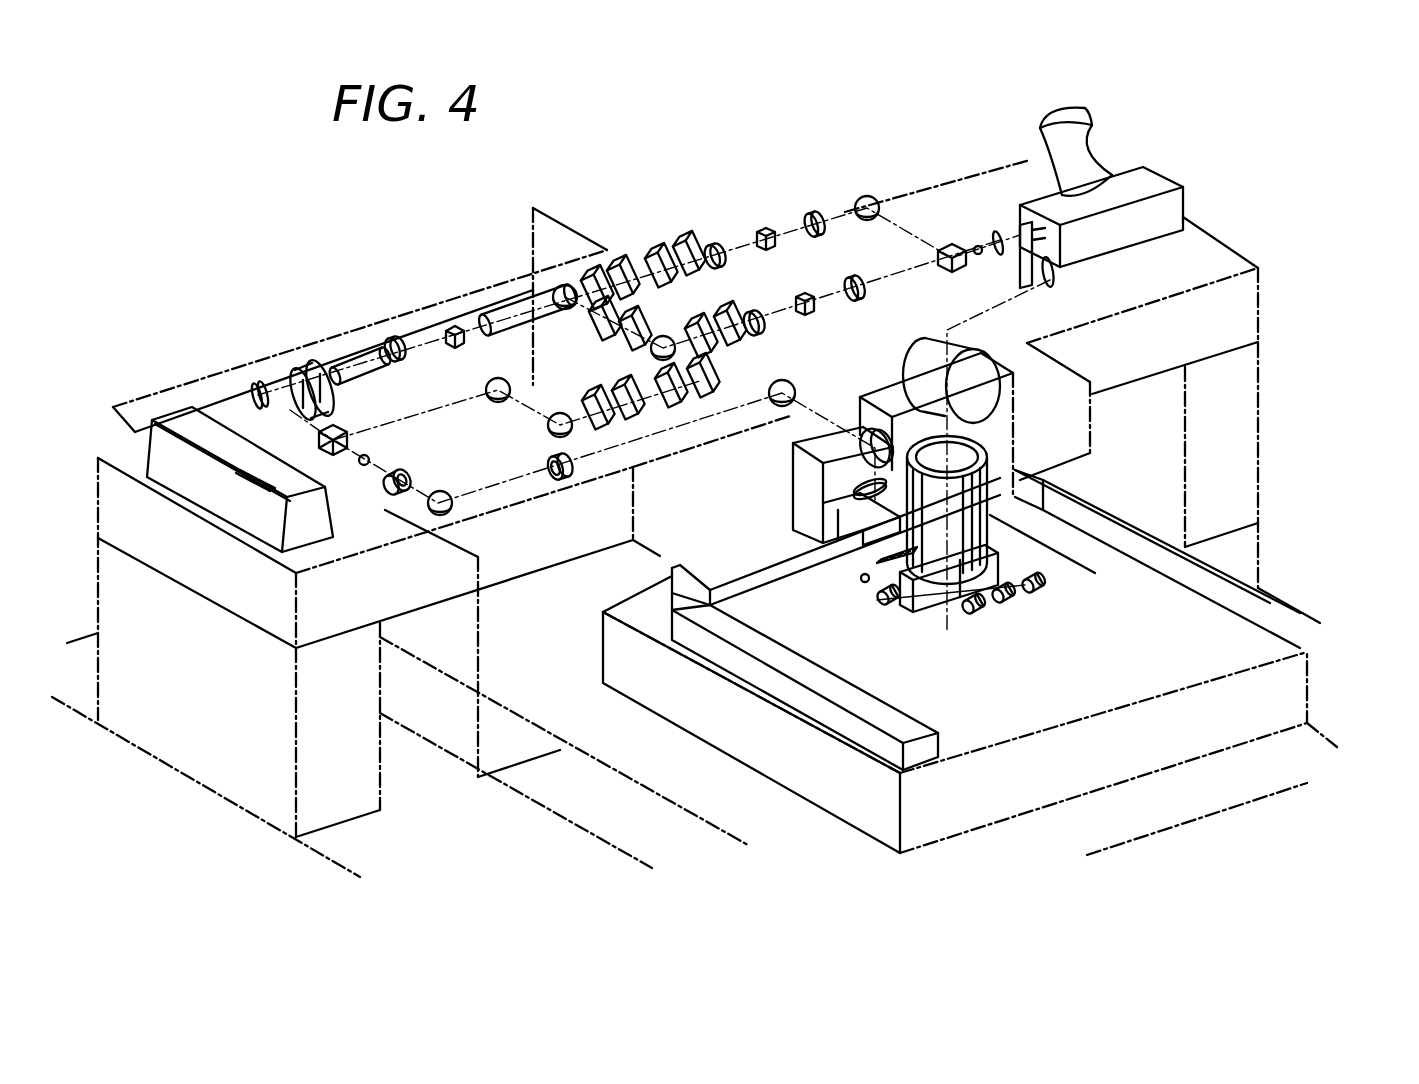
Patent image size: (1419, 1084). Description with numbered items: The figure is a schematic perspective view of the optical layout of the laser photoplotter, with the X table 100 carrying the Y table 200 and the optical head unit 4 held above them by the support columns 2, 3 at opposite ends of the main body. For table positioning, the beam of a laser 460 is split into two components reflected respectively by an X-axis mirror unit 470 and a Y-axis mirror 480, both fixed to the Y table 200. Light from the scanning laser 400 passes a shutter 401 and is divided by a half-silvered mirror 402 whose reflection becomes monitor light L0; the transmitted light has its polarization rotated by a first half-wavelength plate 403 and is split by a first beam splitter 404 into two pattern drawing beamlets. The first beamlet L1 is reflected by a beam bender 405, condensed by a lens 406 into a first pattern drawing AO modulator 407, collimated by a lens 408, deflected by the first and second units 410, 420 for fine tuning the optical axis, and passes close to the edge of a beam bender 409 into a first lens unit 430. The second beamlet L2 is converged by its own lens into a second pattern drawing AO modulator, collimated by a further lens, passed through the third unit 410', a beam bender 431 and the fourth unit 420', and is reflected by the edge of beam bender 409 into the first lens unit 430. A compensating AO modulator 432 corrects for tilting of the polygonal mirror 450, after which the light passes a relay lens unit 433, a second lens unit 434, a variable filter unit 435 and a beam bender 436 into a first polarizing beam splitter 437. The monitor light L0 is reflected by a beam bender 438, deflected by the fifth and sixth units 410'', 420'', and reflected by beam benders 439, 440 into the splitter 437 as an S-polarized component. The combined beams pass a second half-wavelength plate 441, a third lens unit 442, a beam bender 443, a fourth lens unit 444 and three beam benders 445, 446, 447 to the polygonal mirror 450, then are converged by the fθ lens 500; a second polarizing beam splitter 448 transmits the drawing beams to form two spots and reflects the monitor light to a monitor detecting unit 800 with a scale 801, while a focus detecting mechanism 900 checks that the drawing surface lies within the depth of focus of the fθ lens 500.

The X table 100 is at (1213, 820).
The Y table 200 is at (968, 822).
The support column 2 is at (232, 797).
The support column 3 is at (1263, 474).
The optical head unit 4 is at (1220, 258).
The scanning laser 400 is at (1150, 198).
The shutter 401 is at (1022, 222).
The half-silvered mirror 402 is at (998, 231).
The first half-wavelength plate 403 is at (978, 246).
The first beam splitter 404 is at (952, 246).
The beam bender 405 is at (867, 196).
The lens 406 is at (814, 201).
The first pattern drawing AO modulator 407 is at (764, 199).
The lens 408 is at (724, 227).
The beam bender 409 is at (565, 285).
The first unit for fine tuning the optical axis 410 is at (675, 220).
The third unit for fine tuning the optical axis 410' is at (749, 329).
The fifth unit for fine adjusting the optical axis 410'' is at (700, 400).
The second unit for fine tuning the optical axis 420 is at (610, 236).
The fourth unit for fine tuning the optical axis 420' is at (629, 268).
The sixth unit for fine adjusting the optical axis 420'' is at (653, 424).
The first lens unit 430 is at (500, 315).
The beam bender 431 is at (665, 337).
The compensating AO modulator 432 is at (455, 323).
The relay lens unit 433 is at (398, 337).
The second lens unit 434 is at (358, 358).
The variable filter unit 435 is at (309, 352).
The beam bender 436 is at (255, 383).
The first polarizing beam splitter 437 is at (343, 432).
The beam bender 438 is at (1055, 278).
The beam bender 439 is at (548, 425).
The beam bender 440 is at (487, 388).
The second half-wavelength plate 441 is at (370, 460).
The third lens unit 442 is at (412, 477).
The beam bender 443 is at (446, 494).
The fourth lens unit 444 is at (562, 478).
The beam bender 445 is at (794, 393).
The beam bender 446 is at (862, 447).
The beam bender 447 is at (858, 488).
The second polarizing beam splitter 448 is at (905, 615).
The polygonal mirror 450 is at (960, 360).
The laser 460 is at (175, 415).
The X-axis mirror unit 470 is at (918, 727).
The Y-axis mirror 480 is at (1050, 498).
The fθ lens 500 is at (992, 540).
The monitor detecting unit 800 is at (878, 576).
The scale 801 is at (866, 583).
The focus detecting mechanism 900 is at (960, 615).
The monitor light L0 is at (1012, 290).
The first pattern drawing beamlet L1 is at (888, 198).
The second pattern drawing beamlet L2 is at (890, 275).